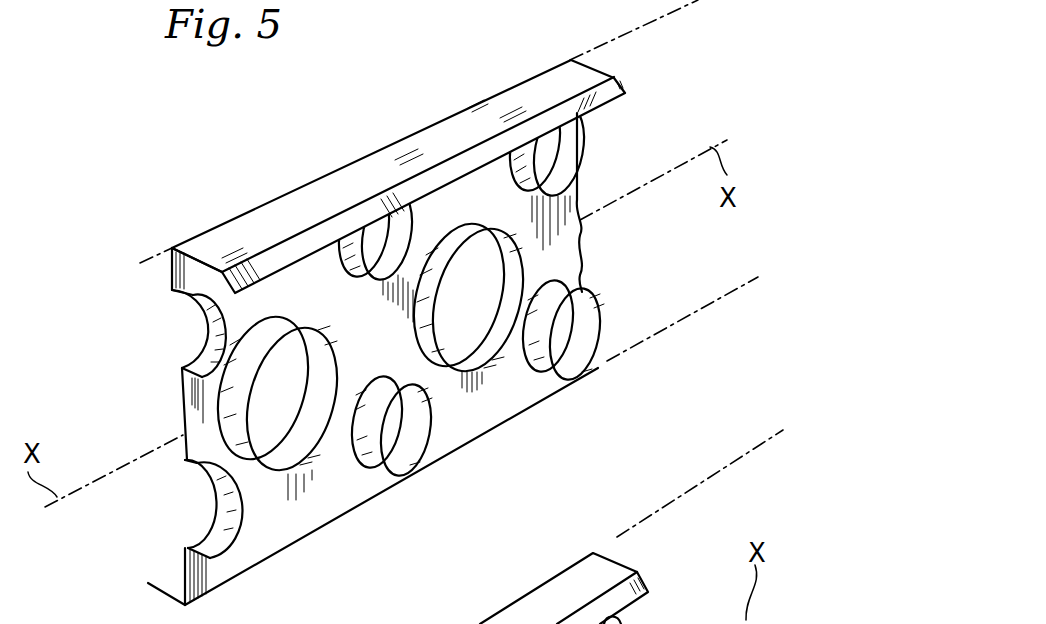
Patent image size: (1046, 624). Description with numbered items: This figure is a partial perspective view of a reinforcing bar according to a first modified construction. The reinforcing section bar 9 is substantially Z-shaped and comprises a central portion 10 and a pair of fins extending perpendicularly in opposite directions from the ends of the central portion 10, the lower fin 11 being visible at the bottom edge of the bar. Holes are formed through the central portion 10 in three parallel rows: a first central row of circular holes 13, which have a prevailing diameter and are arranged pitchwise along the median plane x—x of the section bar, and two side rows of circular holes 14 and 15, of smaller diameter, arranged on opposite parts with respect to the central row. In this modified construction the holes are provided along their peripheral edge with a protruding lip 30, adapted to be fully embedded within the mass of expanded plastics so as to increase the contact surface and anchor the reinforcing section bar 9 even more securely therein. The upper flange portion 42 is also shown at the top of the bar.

The reinforcing section bar 9 is at (102, 205).
The central portion 10 is at (185, 425).
The lower fin 11 is at (172, 577).
The circular holes 13 is at (276, 372).
The circular holes 14 is at (558, 338).
The circular holes 15 is at (370, 245).
The protruding lip 30 is at (592, 327).
The top flange 42 is at (207, 245).